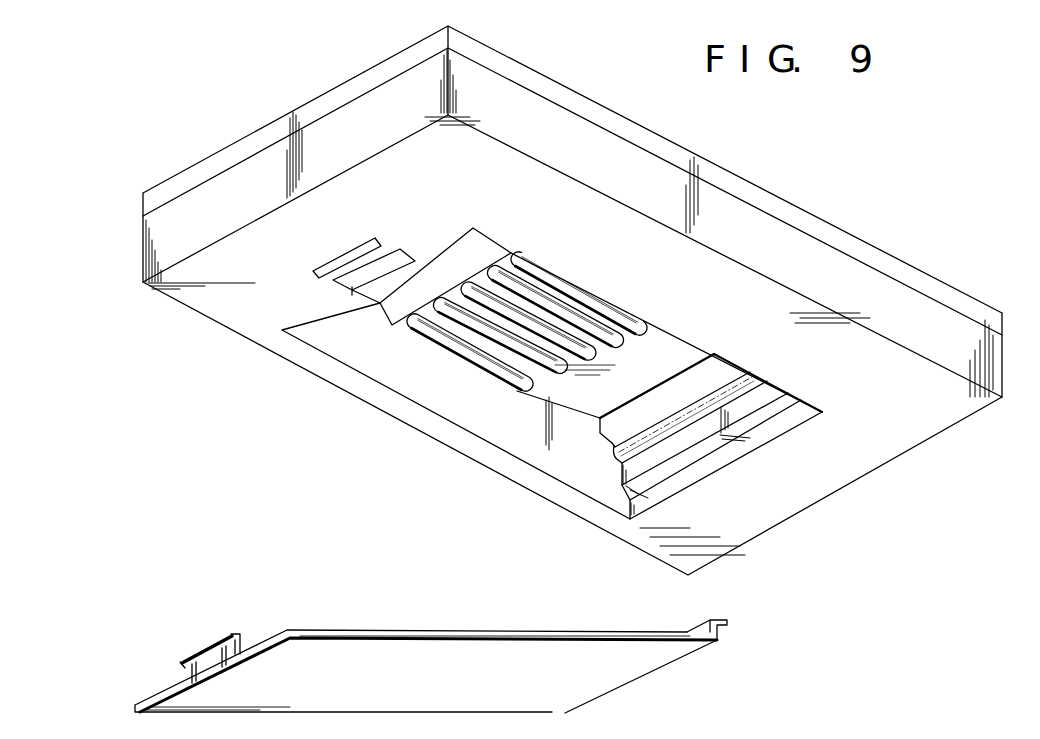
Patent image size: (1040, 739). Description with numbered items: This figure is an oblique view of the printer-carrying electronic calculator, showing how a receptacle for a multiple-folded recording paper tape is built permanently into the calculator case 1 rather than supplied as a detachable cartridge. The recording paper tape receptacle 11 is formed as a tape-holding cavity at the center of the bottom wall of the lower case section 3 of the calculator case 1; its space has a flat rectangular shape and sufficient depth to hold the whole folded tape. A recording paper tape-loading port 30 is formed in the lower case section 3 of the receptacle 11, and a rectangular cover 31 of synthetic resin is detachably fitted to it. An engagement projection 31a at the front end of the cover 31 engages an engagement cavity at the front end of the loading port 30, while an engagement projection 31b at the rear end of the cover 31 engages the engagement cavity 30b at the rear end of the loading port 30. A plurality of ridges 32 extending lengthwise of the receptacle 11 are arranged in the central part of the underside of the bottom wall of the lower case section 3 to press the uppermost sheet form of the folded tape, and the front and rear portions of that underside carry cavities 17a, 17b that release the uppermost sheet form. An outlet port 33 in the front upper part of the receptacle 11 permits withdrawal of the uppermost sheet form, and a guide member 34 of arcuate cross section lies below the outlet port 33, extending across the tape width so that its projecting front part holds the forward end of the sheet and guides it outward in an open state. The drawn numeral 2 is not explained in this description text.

The calculator case 1 is at (272, 109).
The upper rim of housing wall 2 is at (329, 101).
The lower case section 3 is at (188, 203).
The recording paper tape receptacle 11 is at (402, 372).
The cavity 17a is at (682, 347).
The cavity 17b is at (480, 243).
The recording paper tape-loading port 30 is at (500, 440).
The engagement cavity 30b is at (388, 265).
The cover 31 is at (632, 678).
The engagement projection 31a is at (727, 620).
The engagement projection 31b is at (208, 646).
The ridges 32 is at (584, 293).
The outlet port 33 is at (727, 368).
The guide member 34 is at (752, 383).